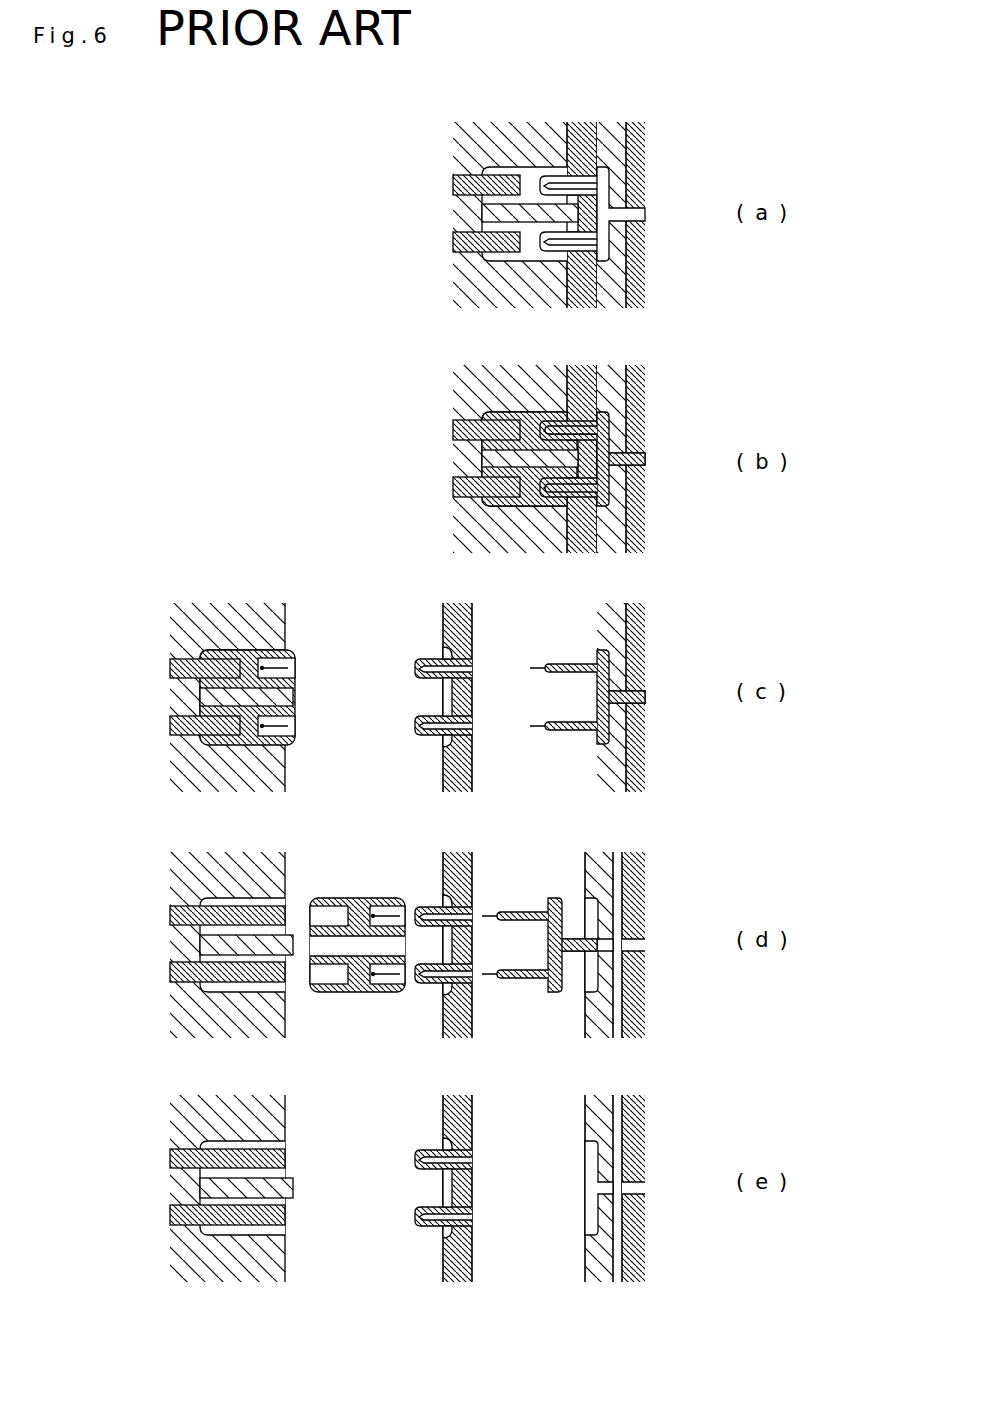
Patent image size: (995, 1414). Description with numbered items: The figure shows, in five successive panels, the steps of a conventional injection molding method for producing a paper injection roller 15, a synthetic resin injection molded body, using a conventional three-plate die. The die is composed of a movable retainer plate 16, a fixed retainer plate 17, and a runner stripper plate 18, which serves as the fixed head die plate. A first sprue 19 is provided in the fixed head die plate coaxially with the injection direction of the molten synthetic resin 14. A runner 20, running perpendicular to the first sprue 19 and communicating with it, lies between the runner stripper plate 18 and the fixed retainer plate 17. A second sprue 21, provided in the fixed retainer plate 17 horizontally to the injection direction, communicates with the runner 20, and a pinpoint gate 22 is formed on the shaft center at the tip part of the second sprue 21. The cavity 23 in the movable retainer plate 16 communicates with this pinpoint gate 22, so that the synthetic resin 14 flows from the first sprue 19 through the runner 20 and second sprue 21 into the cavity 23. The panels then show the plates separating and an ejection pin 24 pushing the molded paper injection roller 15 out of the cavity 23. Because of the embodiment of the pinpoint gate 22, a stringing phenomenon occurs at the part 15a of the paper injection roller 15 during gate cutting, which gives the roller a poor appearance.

The synthetic resin 14 is at (644, 460).
The paper injection roller 15 is at (295, 683).
The stringing part 15a is at (380, 911).
The movable retainer plate 16 is at (514, 133).
The fixed retainer plate 17 is at (574, 131).
The runner stripper plate 18 is at (608, 133).
The first sprue 19 is at (637, 470).
The runner 20 is at (606, 432).
The second sprue 21 is at (588, 415).
The pinpoint gate 22 is at (545, 431).
The cavity 23 is at (484, 413).
The ejection pin 24 is at (470, 186).